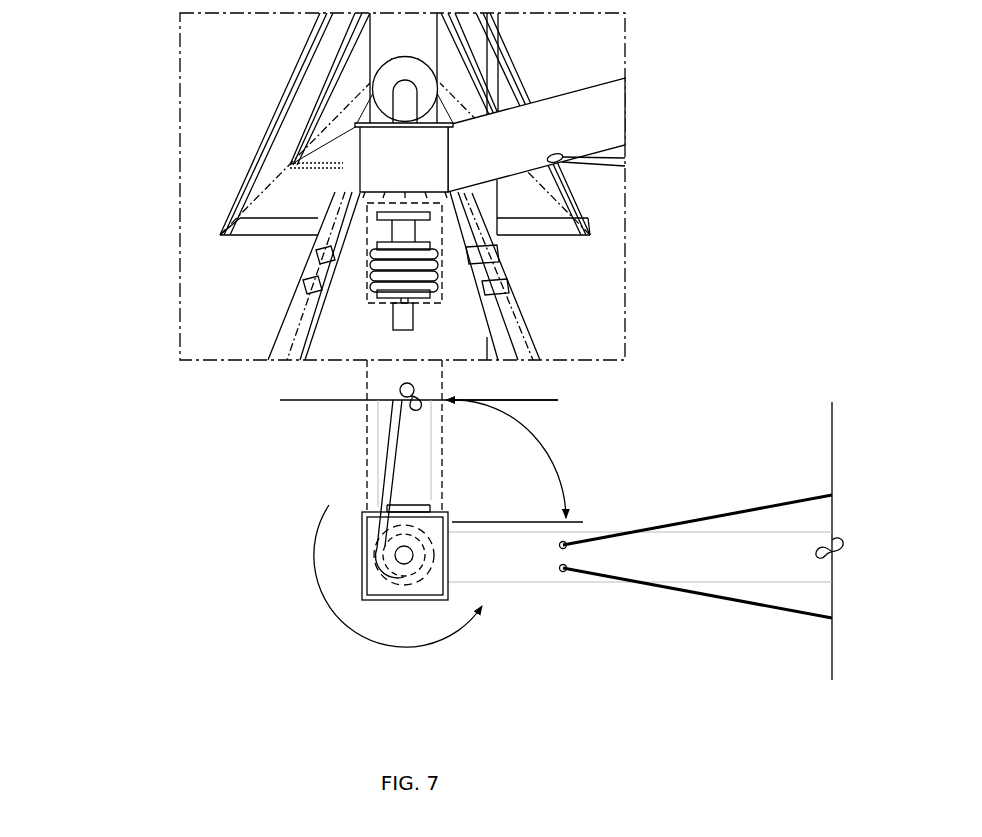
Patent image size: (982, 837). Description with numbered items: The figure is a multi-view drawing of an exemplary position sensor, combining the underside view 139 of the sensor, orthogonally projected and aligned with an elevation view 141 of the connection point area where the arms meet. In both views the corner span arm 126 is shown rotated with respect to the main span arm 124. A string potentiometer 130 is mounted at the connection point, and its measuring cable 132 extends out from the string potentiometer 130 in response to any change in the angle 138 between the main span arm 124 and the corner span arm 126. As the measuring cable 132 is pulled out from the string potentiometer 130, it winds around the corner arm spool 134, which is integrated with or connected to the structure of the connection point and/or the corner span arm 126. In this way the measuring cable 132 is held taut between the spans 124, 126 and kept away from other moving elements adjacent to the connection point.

The elevation view 141 is at (190, 21).
The main span arm 124 is at (383, 82).
The corner span arm 126 is at (573, 127).
The string potentiometer 130 is at (398, 287).
The underside view 139 is at (192, 502).
The measuring cable 132 is at (383, 470).
The corner arm spool 134 is at (404, 556).
The angle 138 is at (552, 465).